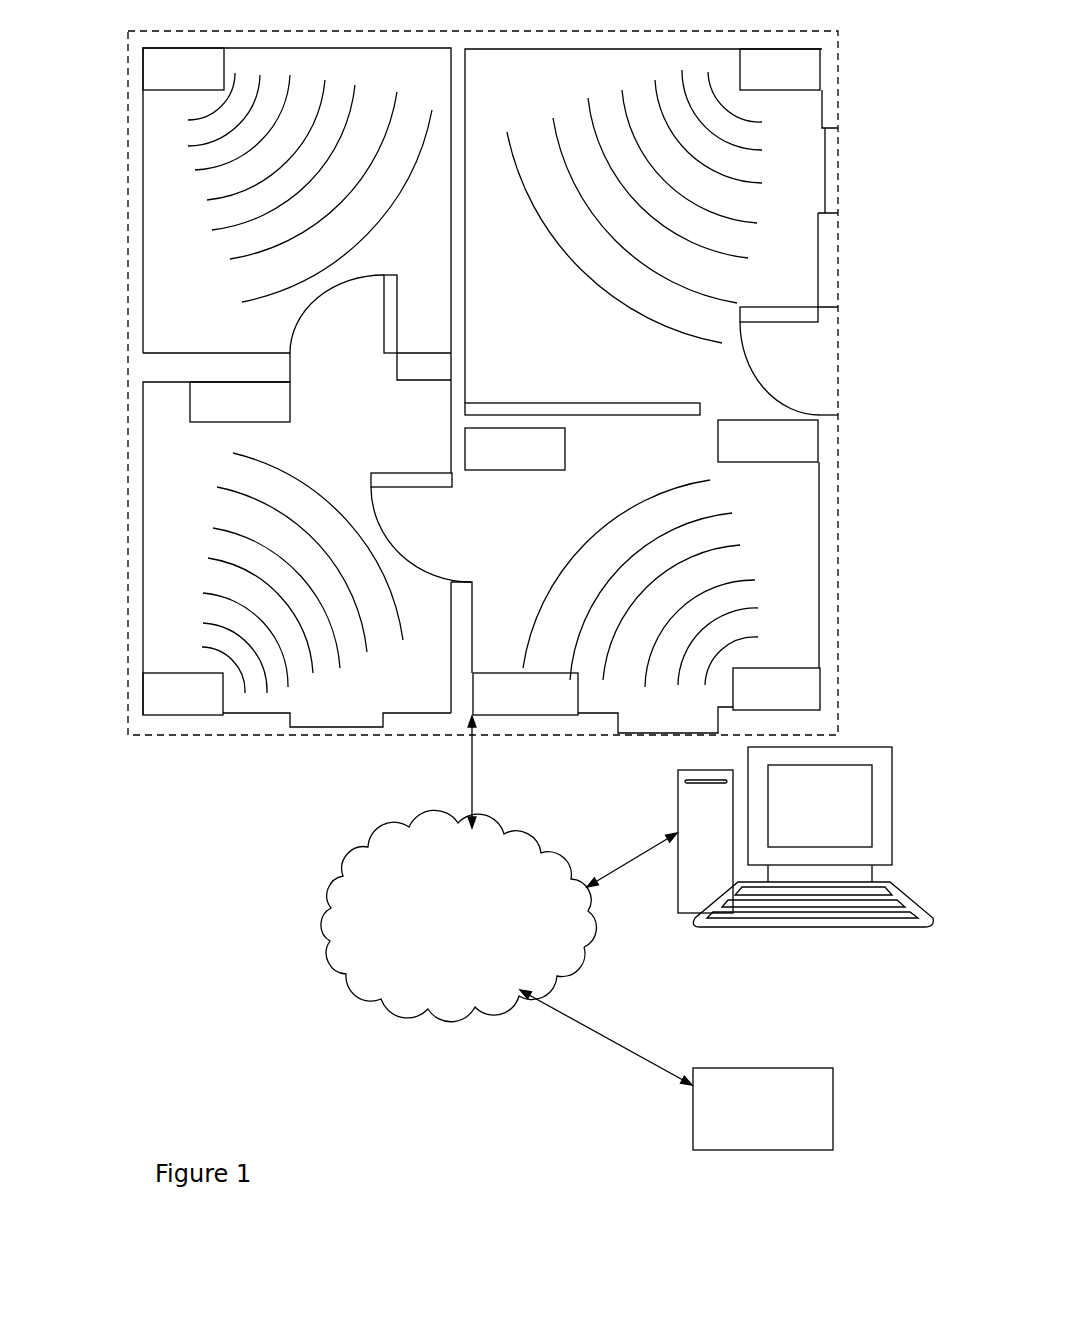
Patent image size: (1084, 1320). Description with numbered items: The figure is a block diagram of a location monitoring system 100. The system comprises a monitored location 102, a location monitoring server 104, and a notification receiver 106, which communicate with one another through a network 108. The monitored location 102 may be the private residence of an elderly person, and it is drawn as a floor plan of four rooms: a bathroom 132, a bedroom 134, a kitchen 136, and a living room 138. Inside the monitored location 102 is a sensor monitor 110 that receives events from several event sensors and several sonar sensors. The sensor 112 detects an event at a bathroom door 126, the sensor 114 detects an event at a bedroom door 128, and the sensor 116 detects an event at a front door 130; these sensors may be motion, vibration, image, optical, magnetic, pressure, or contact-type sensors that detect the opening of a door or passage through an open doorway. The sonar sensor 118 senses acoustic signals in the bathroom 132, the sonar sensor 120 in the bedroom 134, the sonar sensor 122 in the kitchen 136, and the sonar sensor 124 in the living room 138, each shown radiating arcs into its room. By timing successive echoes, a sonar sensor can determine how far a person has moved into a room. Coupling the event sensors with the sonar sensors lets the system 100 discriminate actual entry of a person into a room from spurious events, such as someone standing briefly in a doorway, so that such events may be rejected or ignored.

The location monitoring system 100 is at (228, 1050).
The monitored location 102 is at (138, 738).
The location monitoring server 104 is at (673, 817).
The notification receiver 106 is at (693, 1132).
The network 108 is at (450, 1000).
The sensor monitor 110 is at (518, 707).
The sensor 112 is at (190, 405).
The sensor 114 is at (565, 435).
The sensor 116 is at (814, 436).
The sonar sensor 118 is at (153, 83).
The sonar sensor 120 is at (143, 673).
The sonar sensor 122 is at (820, 70).
The sonar sensor 124 is at (814, 668).
The bathroom door 126 is at (392, 315).
The bedroom door 128 is at (452, 480).
The front door 130 is at (820, 313).
The bathroom 132 is at (167, 263).
The bedroom 134 is at (160, 502).
The kitchen 136 is at (806, 221).
The living room 138 is at (803, 539).